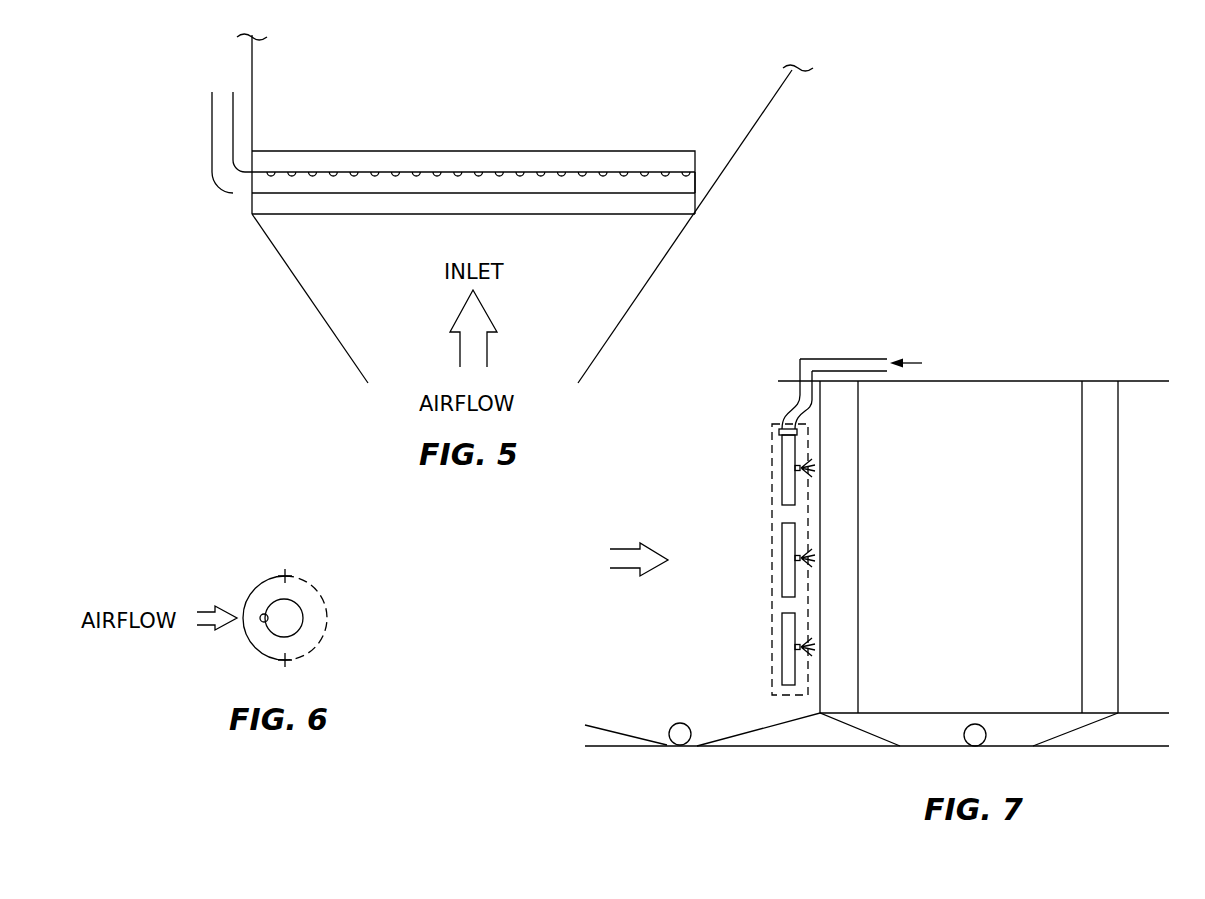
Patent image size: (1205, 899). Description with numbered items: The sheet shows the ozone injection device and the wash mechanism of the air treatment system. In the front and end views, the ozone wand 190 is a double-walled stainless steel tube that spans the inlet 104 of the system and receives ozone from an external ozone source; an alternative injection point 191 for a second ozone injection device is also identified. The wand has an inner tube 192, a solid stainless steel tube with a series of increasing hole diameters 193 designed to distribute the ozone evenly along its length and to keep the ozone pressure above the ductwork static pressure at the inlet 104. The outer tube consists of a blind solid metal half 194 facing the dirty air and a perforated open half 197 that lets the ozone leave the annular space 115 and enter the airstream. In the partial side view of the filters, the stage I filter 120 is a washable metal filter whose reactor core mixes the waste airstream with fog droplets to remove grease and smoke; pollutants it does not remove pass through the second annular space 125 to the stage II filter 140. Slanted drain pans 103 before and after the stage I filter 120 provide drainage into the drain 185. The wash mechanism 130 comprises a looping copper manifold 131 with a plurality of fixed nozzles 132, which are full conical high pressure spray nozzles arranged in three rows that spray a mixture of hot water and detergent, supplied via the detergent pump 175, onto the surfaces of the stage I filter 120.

In FIG. 5, the inlet 104 is at (637, 302).
In FIG. 5, the annular space 115 is at (553, 68).
In FIG. 5, the ozone wand 190 is at (352, 128).
In FIG. 5, the injection point 191 is at (409, 151).
In FIG. 5, the inner tube 192 is at (636, 160).
In FIG. 5, the hole diameters 193 is at (519, 172).
In FIG. 6, the hole diameters 193 is at (250, 598).
In FIG. 6, the blind solid metal half 194 is at (262, 560).
In FIG. 6, the perforated open half 197 is at (326, 572).
In FIG. 7, the stage I filter 120 is at (838, 693).
In FIG. 7, the stage II filter 140 is at (1103, 657).
In FIG. 7, the second annular space 125 is at (990, 639).
In FIG. 7, the slanted drain pans 103 is at (748, 733).
In FIG. 7, the drain 185 is at (670, 746).
In FIG. 7, the detergent pump 175 is at (964, 377).
In FIG. 7, the wash mechanism 130 is at (744, 484).
In FIG. 7, the looping copper manifold 131 is at (780, 578).
In FIG. 7, the fixed nozzles 132 is at (802, 562).